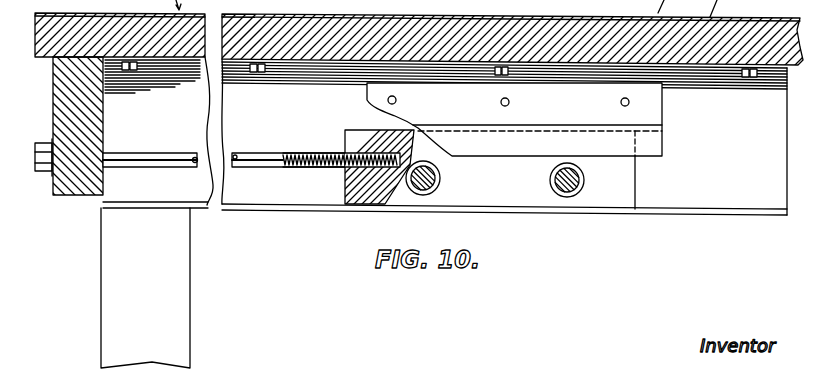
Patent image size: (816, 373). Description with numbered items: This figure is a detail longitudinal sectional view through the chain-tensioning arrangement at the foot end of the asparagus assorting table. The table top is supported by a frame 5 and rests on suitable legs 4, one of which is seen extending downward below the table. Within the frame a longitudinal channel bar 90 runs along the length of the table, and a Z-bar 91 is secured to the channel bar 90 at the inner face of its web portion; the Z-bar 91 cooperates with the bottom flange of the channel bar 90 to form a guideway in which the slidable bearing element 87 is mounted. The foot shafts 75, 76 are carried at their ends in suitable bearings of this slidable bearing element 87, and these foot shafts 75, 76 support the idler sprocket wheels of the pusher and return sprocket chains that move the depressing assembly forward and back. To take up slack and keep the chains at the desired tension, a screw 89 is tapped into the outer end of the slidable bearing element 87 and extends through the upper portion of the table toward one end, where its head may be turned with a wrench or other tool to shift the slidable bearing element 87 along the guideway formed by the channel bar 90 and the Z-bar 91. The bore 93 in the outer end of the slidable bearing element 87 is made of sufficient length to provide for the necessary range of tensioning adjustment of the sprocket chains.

The leg 4 is at (177, 287).
The frame 5 is at (53, 193).
The foot shaft 75 is at (560, 176).
The foot shaft 76 is at (430, 178).
The slidable bearing element 87 is at (625, 187).
The screw 89 is at (255, 153).
The channel bar 90 is at (695, 198).
The Z-bar 91 is at (653, 110).
The bore 93 is at (360, 200).